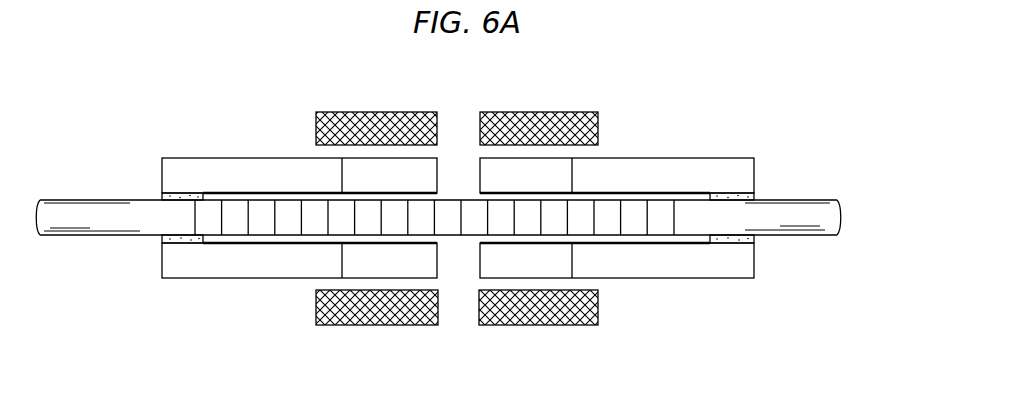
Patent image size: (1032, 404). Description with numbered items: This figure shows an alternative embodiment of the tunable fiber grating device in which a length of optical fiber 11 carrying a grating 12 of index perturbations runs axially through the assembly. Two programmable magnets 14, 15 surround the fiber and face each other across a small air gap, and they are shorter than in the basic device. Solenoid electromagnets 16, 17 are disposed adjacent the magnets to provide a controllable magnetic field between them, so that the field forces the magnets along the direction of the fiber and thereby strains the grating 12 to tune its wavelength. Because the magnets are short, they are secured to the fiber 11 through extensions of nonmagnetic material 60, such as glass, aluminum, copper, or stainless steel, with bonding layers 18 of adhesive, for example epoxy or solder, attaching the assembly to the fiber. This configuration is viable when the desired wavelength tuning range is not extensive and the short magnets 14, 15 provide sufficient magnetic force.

The optical fiber 11 is at (80, 200).
The grating 12 is at (448, 200).
The magnet 14 is at (342, 169).
The magnet 15 is at (573, 168).
The electromagnet 16 is at (340, 112).
The electromagnet 17 is at (554, 326).
The bonding layer 18 is at (158, 238).
The extension of nonmagnetic material 60 is at (712, 158).